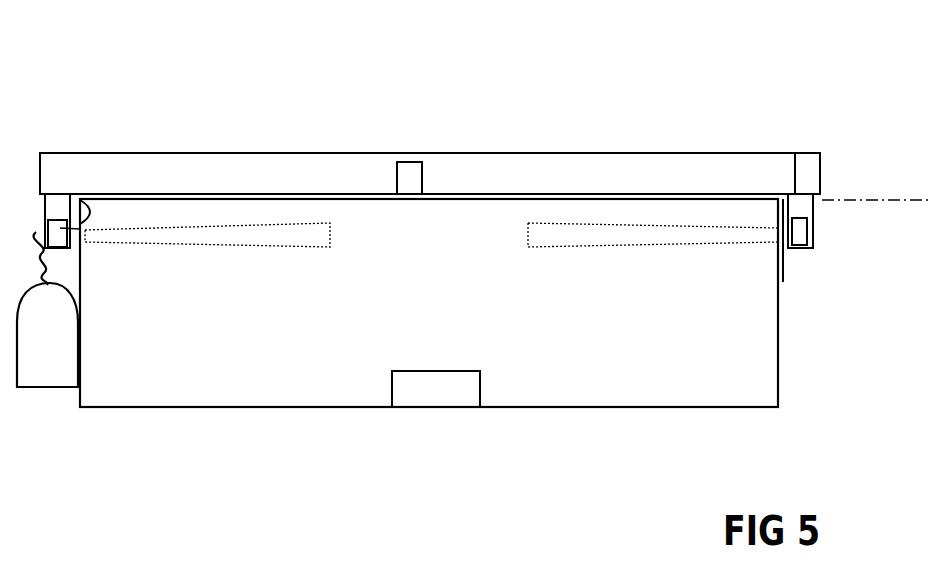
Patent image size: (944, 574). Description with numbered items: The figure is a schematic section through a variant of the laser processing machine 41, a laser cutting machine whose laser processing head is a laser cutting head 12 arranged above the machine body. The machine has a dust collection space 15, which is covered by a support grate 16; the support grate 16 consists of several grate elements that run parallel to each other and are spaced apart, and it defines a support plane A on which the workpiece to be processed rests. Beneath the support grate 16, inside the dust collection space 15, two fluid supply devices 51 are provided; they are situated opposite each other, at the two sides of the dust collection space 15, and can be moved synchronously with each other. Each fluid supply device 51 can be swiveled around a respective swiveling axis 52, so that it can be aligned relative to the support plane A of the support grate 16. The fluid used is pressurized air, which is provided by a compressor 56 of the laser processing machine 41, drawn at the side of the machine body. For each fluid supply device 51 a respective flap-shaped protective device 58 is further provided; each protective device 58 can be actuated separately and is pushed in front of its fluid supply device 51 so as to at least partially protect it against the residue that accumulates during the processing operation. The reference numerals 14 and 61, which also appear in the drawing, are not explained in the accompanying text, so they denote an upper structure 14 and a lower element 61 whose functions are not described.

The laser cutting head 12 is at (412, 175).
The top plate 14 is at (508, 168).
The dust collection space 15 is at (303, 322).
The support grate 16 is at (592, 193).
The laser processing machine 41 is at (308, 138).
The fluid supply device 51 is at (98, 194).
The swiveling axis 52 is at (57, 193).
The compressor 56 is at (58, 368).
The protective device 58 is at (71, 283).
The base block 61 is at (443, 393).
The support plane A is at (880, 197).